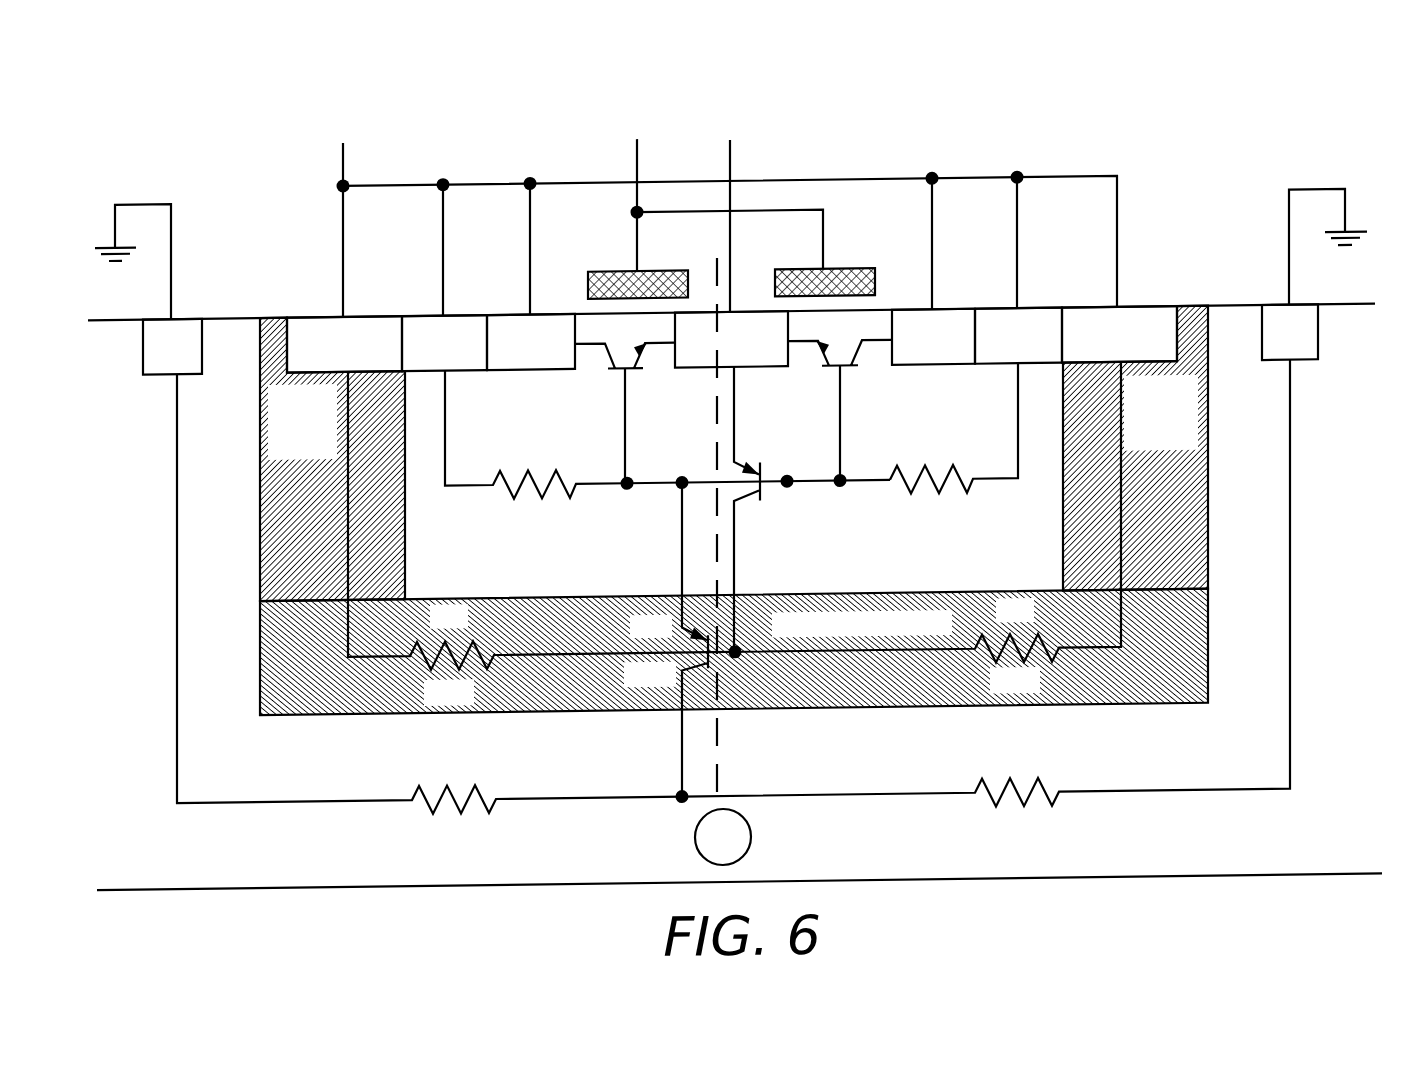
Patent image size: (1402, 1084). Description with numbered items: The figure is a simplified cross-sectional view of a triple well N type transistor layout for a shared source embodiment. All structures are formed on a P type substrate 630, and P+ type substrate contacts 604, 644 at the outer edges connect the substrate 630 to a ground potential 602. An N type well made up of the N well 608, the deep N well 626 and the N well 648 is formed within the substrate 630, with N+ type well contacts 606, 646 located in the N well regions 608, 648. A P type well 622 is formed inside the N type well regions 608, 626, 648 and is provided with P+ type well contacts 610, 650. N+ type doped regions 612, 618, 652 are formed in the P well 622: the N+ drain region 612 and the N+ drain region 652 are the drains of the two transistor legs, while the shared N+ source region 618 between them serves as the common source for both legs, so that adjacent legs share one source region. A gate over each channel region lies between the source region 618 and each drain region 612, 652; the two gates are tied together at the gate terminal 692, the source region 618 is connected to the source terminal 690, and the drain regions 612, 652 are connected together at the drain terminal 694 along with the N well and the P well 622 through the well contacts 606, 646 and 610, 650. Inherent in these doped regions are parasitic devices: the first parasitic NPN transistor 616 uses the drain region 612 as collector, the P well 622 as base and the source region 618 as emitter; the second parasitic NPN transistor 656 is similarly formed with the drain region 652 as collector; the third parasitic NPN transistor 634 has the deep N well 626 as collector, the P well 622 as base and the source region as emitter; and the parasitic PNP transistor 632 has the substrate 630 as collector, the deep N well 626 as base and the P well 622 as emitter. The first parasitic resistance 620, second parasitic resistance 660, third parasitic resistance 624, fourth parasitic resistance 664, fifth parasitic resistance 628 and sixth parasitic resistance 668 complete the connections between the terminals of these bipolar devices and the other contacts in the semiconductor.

The ground potential 602 is at (134, 183).
The P+ type substrate contact 604 is at (159, 377).
The N+ type well contact 606 is at (330, 313).
The N well 608 is at (332, 458).
The P+ type well contact 610 is at (428, 313).
The N+ drain region 612 is at (515, 313).
The parasitic NPN transistor Q1 616 is at (625, 413).
The shared N+ source region 618 is at (746, 379).
The parasitic resistance R1 620 is at (536, 445).
The P type well 622 is at (466, 552).
The parasitic resistance R3 624 is at (528, 537).
The deep N well 626 is at (734, 652).
The parasitic resistance R5 628 is at (429, 605).
The P type substrate 630 is at (643, 828).
The parasitic PNP transistor Q2 632 is at (666, 639).
The parasitic NPN transistor Q3 634 is at (767, 509).
The P+ type substrate contact 644 is at (1307, 377).
The N+ type well contact 646 is at (1137, 314).
The N well 648 is at (1135, 448).
The P+ type well contact 650 is at (1037, 314).
The N+ drain region 652 is at (951, 314).
The parasitic NPN transistor Q0 656 is at (840, 410).
The parasitic resistance R2 660 is at (954, 440).
The parasitic resistance R4 664 is at (914, 529).
The parasitic resistance R6 668 is at (986, 598).
The source terminal 690 is at (730, 200).
The gate terminal 692 is at (731, 192).
The drain terminal 694 is at (715, 201).